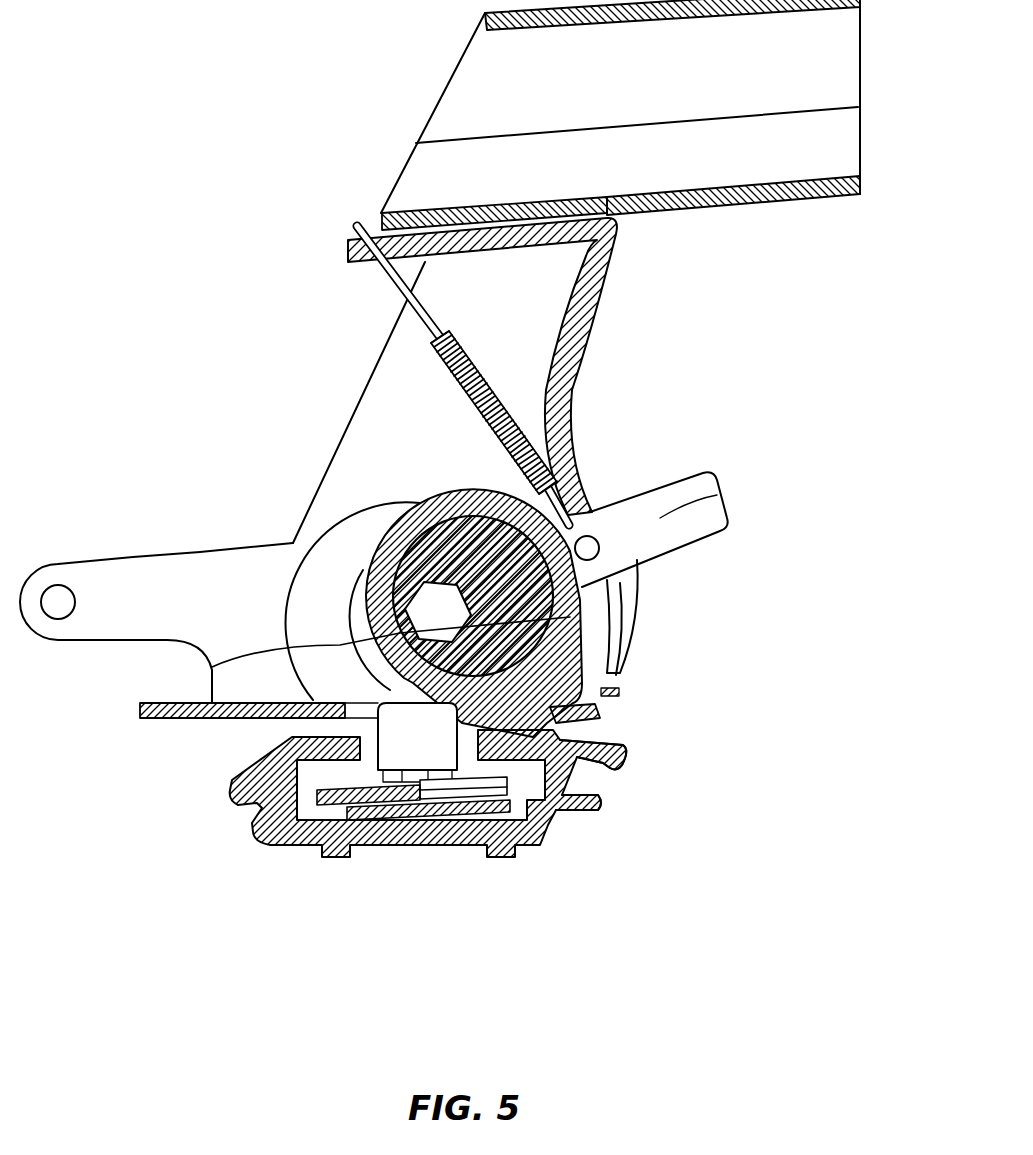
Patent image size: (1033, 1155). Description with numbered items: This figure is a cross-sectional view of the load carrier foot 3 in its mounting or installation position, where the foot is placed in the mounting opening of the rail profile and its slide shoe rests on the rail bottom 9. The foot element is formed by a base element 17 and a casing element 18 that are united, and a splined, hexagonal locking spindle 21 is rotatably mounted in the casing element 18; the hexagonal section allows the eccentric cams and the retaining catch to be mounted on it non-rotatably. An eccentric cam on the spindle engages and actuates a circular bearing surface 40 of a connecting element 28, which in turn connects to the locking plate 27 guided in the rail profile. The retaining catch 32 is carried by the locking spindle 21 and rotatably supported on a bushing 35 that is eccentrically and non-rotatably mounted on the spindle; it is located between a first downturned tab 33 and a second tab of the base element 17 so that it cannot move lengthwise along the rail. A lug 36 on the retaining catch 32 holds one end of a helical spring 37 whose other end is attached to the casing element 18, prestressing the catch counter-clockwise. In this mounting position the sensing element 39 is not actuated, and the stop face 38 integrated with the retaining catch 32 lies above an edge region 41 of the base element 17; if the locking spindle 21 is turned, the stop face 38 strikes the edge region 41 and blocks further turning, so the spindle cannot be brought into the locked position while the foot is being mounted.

The load carrier foot 3 is at (283, 318).
The rail bottom 9 is at (287, 847).
The base element 17 is at (607, 721).
The casing element 18 is at (347, 242).
The locking spindle 21 is at (338, 712).
The locking plate 27 is at (433, 848).
The connecting element 28 is at (360, 543).
The retaining catch 32 is at (417, 503).
The first downturned tab 33 is at (367, 847).
The bushing 35 is at (512, 633).
The lug 36 is at (718, 494).
The helical spring 37 is at (545, 385).
The stop face 38 is at (582, 765).
The sensing element 39 is at (553, 825).
The circular bearing surface 40 is at (212, 667).
The edge region 41 is at (623, 690).